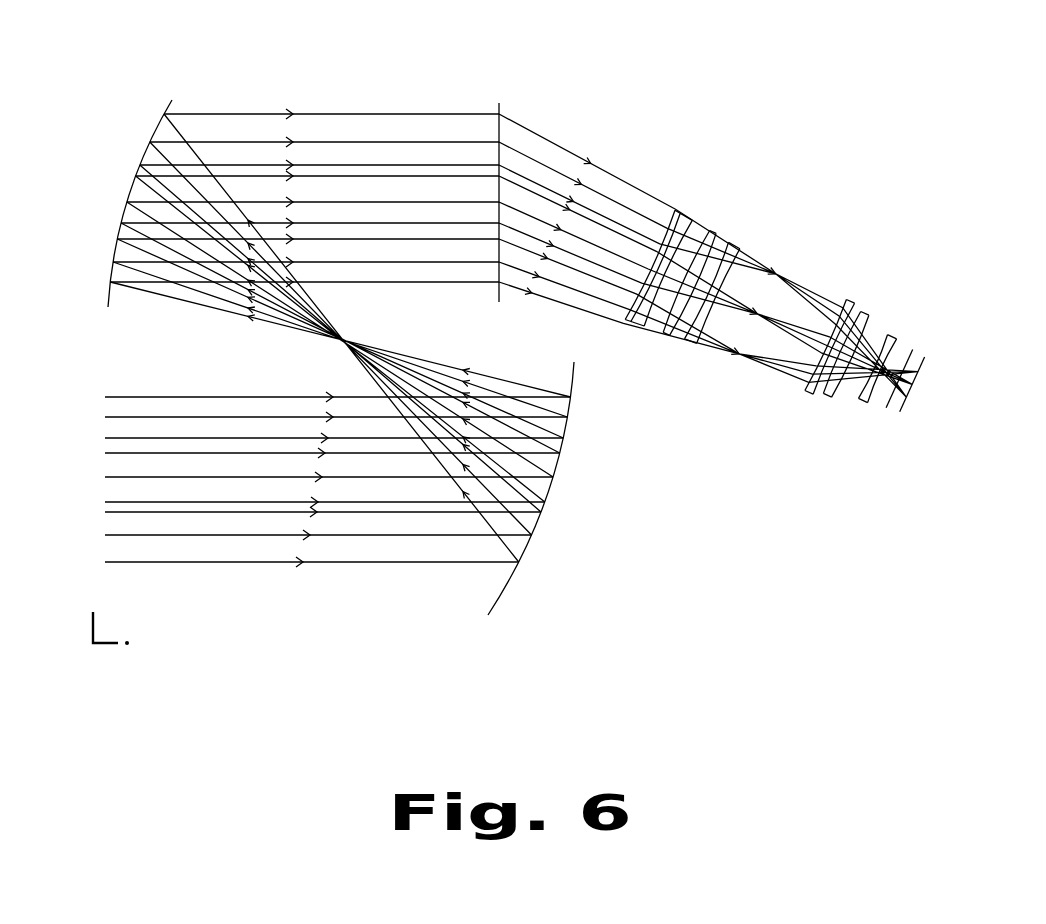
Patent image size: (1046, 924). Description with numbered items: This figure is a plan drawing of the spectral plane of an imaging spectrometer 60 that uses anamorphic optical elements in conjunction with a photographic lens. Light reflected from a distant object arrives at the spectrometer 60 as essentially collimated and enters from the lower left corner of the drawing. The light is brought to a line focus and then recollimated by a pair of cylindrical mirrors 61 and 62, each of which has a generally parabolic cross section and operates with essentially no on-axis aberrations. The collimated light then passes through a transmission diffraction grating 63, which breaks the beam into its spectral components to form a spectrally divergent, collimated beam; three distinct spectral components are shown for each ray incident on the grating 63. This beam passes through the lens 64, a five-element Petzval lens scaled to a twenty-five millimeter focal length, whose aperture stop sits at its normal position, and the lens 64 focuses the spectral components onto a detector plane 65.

The spectrometer 60 is at (124, 49).
The cylindrical mirror 61 is at (578, 400).
The cylindrical mirror 62 is at (135, 135).
The transmission diffraction grating 63 is at (507, 108).
The lens 64 is at (913, 352).
The detector plane 65 is at (918, 395).